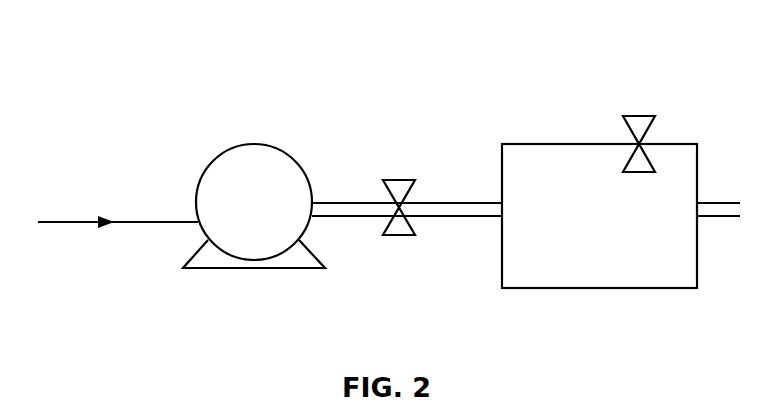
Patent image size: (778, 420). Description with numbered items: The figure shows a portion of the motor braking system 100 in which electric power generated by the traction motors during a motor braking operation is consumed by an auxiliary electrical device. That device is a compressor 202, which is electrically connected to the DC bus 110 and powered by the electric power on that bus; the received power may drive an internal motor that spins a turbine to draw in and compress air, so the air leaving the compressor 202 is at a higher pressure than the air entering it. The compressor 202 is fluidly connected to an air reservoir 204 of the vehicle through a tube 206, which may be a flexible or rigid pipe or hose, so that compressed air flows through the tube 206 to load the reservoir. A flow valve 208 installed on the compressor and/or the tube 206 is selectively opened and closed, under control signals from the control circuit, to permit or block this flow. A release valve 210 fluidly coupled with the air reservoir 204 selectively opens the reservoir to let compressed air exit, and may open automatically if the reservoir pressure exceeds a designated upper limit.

The motor braking system 100 is at (152, 79).
The DC bus 110 is at (72, 221).
The compressor 202 is at (253, 148).
The air reservoir 204 is at (560, 143).
The tube 206 is at (353, 201).
The flow valve 208 is at (413, 190).
The release valve 210 is at (652, 127).